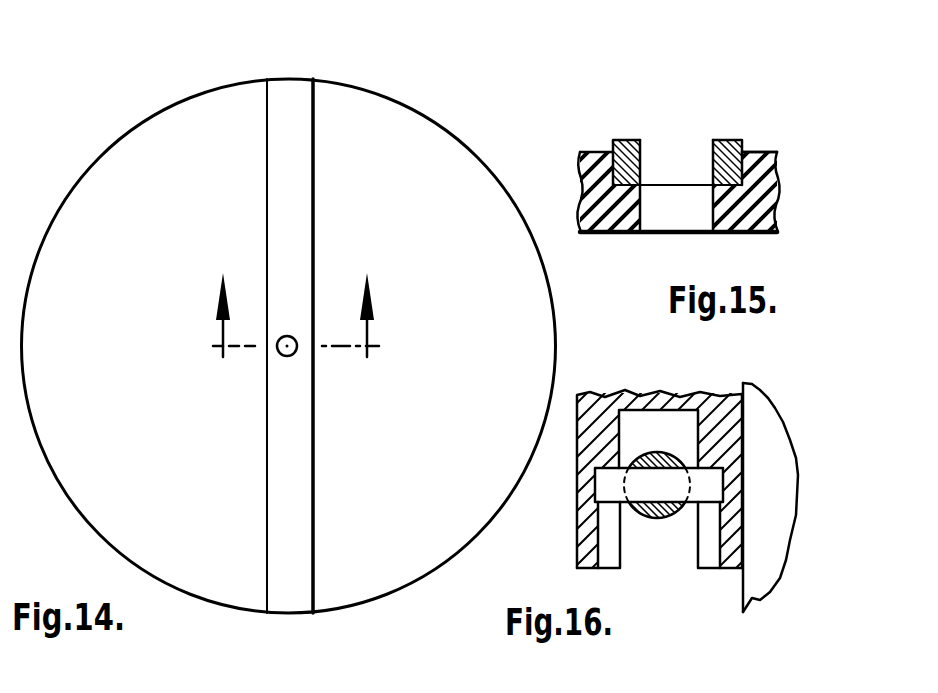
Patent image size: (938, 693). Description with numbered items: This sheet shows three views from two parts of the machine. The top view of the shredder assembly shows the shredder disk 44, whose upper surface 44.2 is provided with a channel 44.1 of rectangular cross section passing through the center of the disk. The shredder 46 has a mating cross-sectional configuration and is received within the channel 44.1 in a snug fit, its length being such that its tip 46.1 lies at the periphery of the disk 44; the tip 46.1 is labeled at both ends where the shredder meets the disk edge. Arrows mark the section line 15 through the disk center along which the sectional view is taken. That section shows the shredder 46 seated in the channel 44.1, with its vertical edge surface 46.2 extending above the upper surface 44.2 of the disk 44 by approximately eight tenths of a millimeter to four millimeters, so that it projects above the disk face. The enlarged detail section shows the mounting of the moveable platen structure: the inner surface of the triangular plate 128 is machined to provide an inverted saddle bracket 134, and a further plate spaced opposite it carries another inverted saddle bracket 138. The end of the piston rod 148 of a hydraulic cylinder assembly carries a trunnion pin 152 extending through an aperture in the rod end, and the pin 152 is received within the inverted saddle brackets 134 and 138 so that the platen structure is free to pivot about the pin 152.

In FIG. 14, the shredder disk 44 is at (142, 137).
In FIG. 15, the shredder disk 44 is at (585, 172).
In FIG. 14, the channel 44.1 is at (267, 228).
In FIG. 15, the channel 44.1 is at (633, 140).
In FIG. 14, the upper surface 44.2 is at (143, 285).
In FIG. 15, the upper surface 44.2 is at (755, 152).
In FIG. 14, the shredder 46 is at (313, 143).
In FIG. 15, the shredder 46 is at (722, 140).
In FIG. 14, the tip 46.1 is at (283, 79).
In FIG. 14, the vertical edge surface 46.2 is at (266, 492).
In FIG. 15, the vertical edge surface 46.2 is at (614, 142).
In FIG. 14, the section line 15- 15 is at (300, 318).
In FIG. 16, the triangular plate 128 is at (722, 440).
In FIG. 16, the inverted saddle bracket 134 is at (704, 545).
In FIG. 16, the inverted saddle bracket 138 is at (604, 545).
In FIG. 16, the piston rod 148 is at (676, 448).
In FIG. 16, the trunnion pin 152 is at (630, 503).